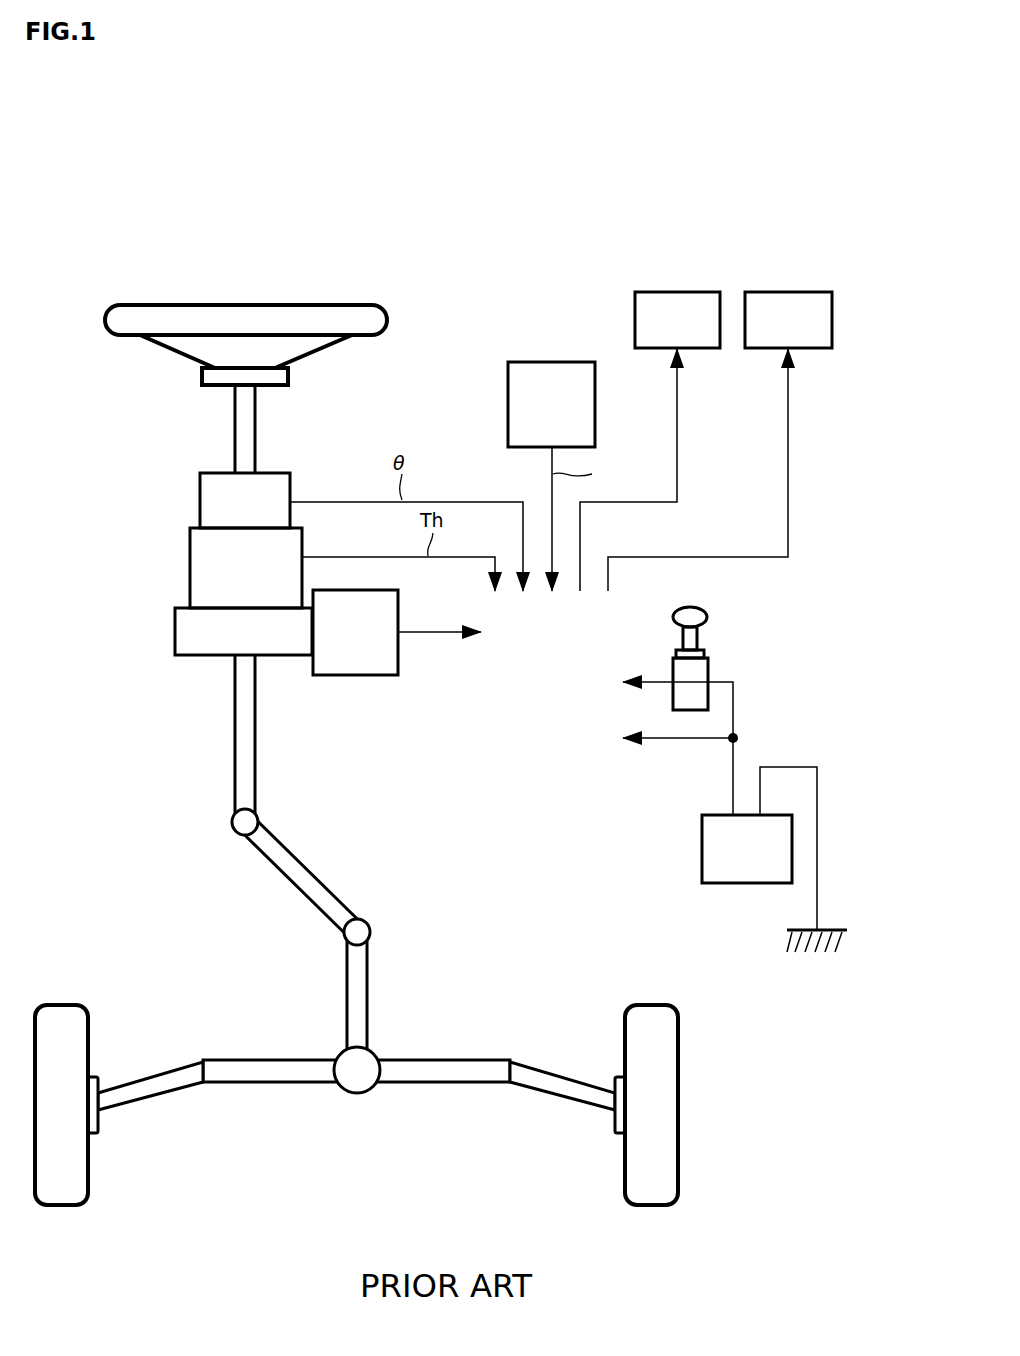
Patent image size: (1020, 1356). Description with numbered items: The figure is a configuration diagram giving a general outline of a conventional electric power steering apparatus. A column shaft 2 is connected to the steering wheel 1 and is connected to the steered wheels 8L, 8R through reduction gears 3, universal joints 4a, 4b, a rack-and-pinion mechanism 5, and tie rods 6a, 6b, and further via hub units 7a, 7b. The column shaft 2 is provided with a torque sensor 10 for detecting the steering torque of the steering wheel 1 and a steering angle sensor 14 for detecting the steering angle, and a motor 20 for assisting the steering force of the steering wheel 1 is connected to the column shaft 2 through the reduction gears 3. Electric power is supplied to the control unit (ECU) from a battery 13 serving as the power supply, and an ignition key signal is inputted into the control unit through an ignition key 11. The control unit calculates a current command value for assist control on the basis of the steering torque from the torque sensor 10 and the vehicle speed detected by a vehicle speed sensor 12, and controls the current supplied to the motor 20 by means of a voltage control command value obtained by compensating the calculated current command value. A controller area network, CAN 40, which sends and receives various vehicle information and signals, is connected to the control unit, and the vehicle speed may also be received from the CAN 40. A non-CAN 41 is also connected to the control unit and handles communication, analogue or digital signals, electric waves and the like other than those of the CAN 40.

The steering wheel 1 is at (387, 312).
The column shaft 2 is at (235, 432).
The reduction gears 3 is at (175, 637).
The universal joint 4a is at (232, 828).
The universal joint 4b is at (344, 935).
The rack-and-pinion mechanism 5 is at (375, 1050).
The tie rod 6a is at (132, 1080).
The tie rod 6b is at (542, 1070).
The hub unit 7a is at (99, 1128).
The hub unit 7b is at (612, 1128).
The steered wheel 8L is at (90, 1195).
The steered wheel 8R is at (625, 1195).
The torque sensor 10 is at (190, 558).
The ignition key 11 is at (708, 614).
The vehicle speed sensor 12 is at (595, 372).
The battery 13 is at (702, 838).
The steering angle sensor 14 is at (200, 493).
The motor 20 is at (400, 593).
The CAN 40 is at (441, 738).
The non-CAN 41 is at (705, 291).